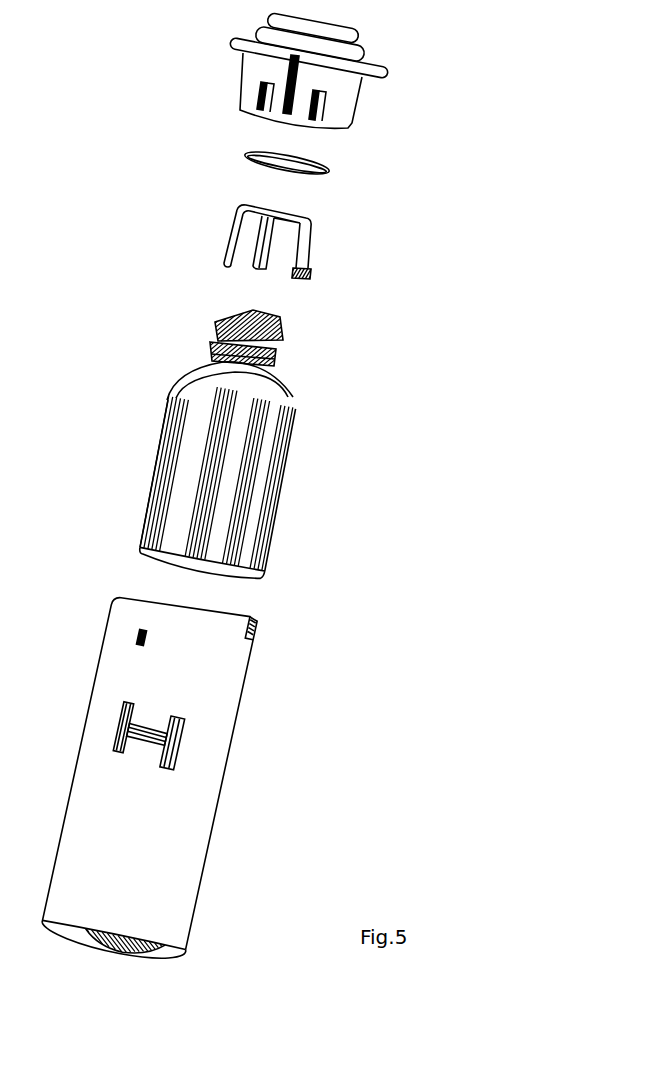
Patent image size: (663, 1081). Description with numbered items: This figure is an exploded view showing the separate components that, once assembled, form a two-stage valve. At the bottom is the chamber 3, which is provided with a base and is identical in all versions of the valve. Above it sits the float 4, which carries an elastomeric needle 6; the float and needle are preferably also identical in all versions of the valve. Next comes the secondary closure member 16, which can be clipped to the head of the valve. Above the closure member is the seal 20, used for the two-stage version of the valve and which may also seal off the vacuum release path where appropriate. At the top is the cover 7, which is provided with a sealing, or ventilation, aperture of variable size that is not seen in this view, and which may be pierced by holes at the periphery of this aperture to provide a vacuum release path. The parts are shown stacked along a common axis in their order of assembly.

The chamber 3 is at (212, 772).
The float 4 is at (279, 500).
The elastomeric needle 6 is at (275, 323).
The cover 7 is at (359, 91).
The secondary closure member 16 is at (313, 275).
The seal 20 is at (332, 170).